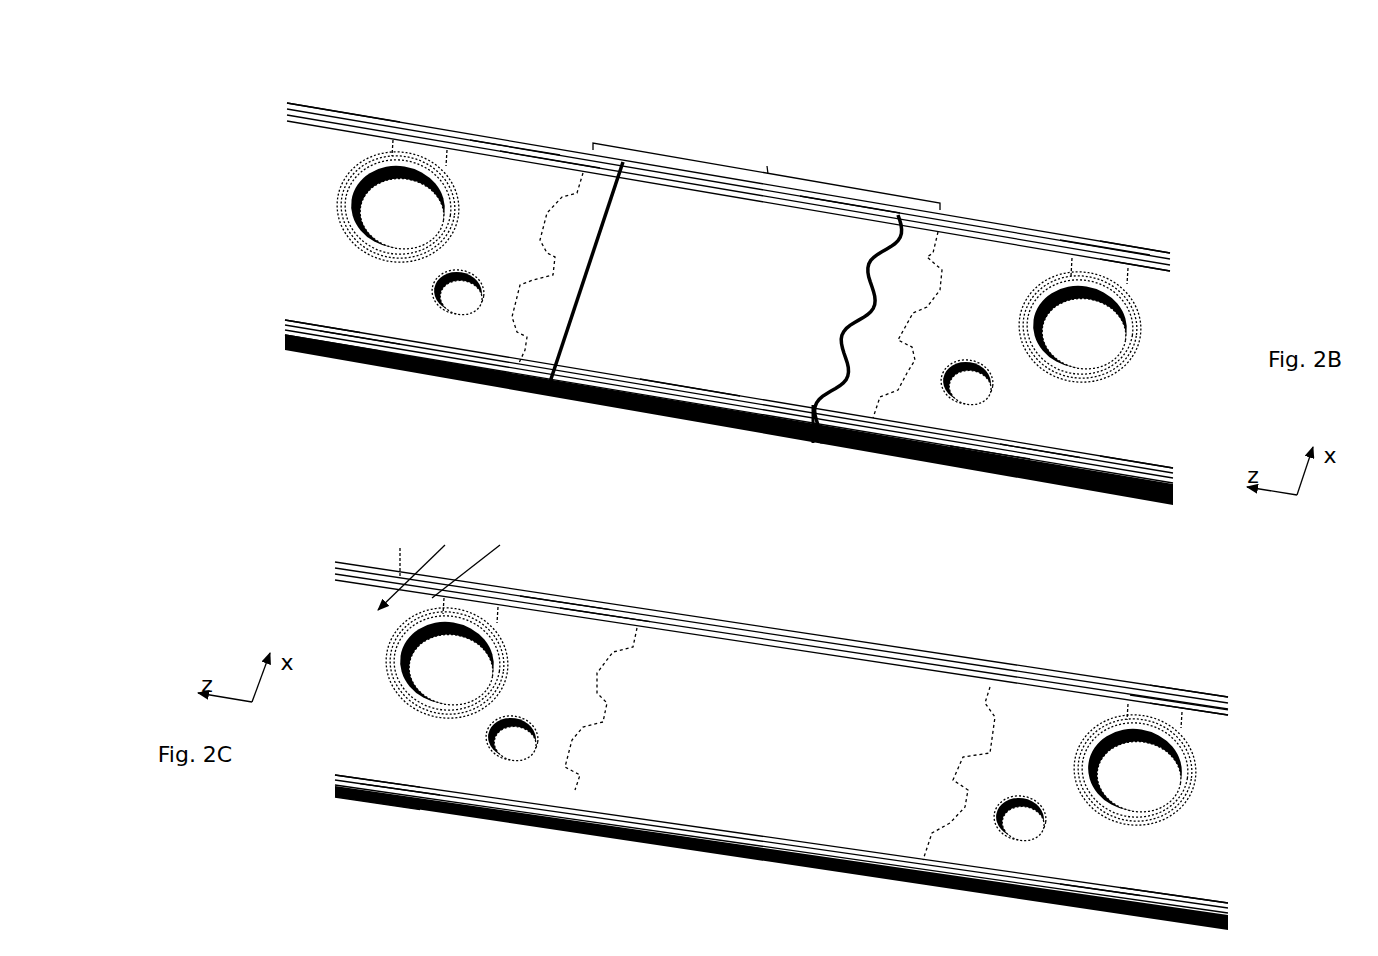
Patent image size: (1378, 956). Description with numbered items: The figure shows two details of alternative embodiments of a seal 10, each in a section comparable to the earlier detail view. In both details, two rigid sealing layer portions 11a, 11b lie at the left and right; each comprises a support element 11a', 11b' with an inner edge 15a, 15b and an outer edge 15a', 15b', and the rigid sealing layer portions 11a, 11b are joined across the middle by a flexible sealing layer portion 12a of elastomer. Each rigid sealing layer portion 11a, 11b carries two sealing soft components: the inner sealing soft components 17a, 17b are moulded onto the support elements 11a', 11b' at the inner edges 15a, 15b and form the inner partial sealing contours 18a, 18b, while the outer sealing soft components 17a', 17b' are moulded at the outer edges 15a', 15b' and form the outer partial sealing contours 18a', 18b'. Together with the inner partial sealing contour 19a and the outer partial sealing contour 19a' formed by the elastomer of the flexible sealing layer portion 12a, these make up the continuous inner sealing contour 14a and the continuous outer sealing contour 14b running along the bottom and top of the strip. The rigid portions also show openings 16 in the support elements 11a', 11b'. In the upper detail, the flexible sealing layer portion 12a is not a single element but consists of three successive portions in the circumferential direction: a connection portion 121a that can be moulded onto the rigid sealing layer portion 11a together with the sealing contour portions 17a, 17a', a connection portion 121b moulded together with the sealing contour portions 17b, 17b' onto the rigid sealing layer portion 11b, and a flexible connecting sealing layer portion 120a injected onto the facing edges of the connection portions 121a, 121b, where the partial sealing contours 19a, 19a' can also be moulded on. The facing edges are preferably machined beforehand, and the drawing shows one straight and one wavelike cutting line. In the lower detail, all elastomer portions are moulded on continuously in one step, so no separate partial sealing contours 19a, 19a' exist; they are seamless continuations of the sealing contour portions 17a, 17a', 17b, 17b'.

In FIG. 2B, the seal 10 is at (953, 143).
In FIG. 2C, the seal 10 is at (540, 868).
In FIG. 2B, the rigid sealing layer portion 11a is at (457, 206).
In FIG. 2B, the support element 11a' is at (411, 169).
In FIG. 2B, the rigid sealing layer portion 11b is at (1076, 284).
In FIG. 2C, the rigid sealing layer portion 11b is at (1135, 742).
In FIG. 2B, the support element 11b' is at (967, 294).
In FIG. 2C, the support element 11b' is at (980, 748).
In FIG. 2B, the flexible sealing layer portion 12a is at (766, 174).
In FIG. 2B, the continuous inner sealing contour 14a is at (495, 390).
In FIG. 2C, the continuous inner sealing contour 14a is at (648, 845).
In FIG. 2B, the continuous outer sealing contour 14b is at (645, 173).
In FIG. 2C, the continuous outer sealing contour 14b is at (703, 627).
In FIG. 2B, the inner edge 15a is at (360, 311).
In FIG. 2C, the inner edge 15a is at (400, 759).
In FIG. 2B, the outer edge 15a' is at (550, 127).
In FIG. 2C, the outer edge 15a' is at (605, 585).
In FIG. 2B, the inner edge 15b is at (1043, 427).
In FIG. 2C, the inner edge 15b is at (1108, 866).
In FIG. 2B, the outer edge 15b' is at (1156, 292).
In FIG. 2C, the outer edge 15b' is at (1214, 736).
In FIG. 2B, the fastening hole 16 is at (472, 300).
In FIG. 2C, the fastening hole 16 is at (508, 750).
In FIG. 2B, the inner sealing soft component 17a is at (321, 364).
In FIG. 2C, the inner sealing soft component 17a is at (364, 816).
In FIG. 2B, the outer sealing soft component 17a' is at (515, 134).
In FIG. 2C, the outer sealing soft component 17a' is at (565, 588).
In FIG. 2B, the inner sealing soft component 17b is at (990, 488).
In FIG. 2C, the inner sealing soft component 17b is at (1073, 913).
In FIG. 2B, the outer sealing soft component 17b' is at (1108, 212).
In FIG. 2C, the outer sealing soft component 17b' is at (1179, 665).
In FIG. 2B, the inner partial sealing contour 18a is at (304, 299).
In FIG. 2C, the inner partial sealing contour 18a is at (357, 749).
In FIG. 2B, the outer partial sealing contour 18a' is at (343, 89).
In FIG. 2B, the inner partial sealing contour 18b is at (1160, 354).
In FIG. 2C, the inner partial sealing contour 18b is at (1185, 879).
In FIG. 2C, the outer partial sealing contour 18b' is at (1232, 700).
In FIG. 2B, the inner partial sealing contour 19a is at (690, 427).
In FIG. 2B, the outer partial sealing contour 19a' is at (850, 168).
In FIG. 2B, the flexible connecting sealing layer portion 120a is at (617, 360).
In FIG. 2B, the connection portion 121a is at (552, 337).
In FIG. 2B, the connection portion 121b is at (817, 445).